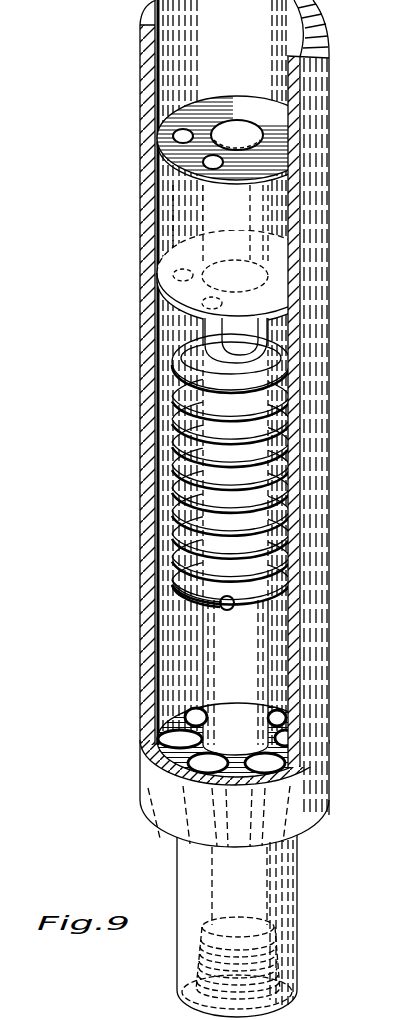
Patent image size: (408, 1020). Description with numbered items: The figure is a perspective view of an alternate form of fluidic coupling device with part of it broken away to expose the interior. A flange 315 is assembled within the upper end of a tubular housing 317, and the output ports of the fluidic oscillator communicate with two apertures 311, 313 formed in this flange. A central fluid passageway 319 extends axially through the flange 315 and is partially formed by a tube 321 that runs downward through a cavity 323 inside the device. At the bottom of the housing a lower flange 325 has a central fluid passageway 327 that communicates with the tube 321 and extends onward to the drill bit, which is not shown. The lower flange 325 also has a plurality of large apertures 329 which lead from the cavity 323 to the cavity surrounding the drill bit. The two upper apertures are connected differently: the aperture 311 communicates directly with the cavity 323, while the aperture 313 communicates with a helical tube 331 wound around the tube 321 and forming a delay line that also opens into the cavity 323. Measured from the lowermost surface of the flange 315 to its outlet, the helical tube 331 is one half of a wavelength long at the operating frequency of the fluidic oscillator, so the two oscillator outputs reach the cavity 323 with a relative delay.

The aperture 311 is at (170, 180).
The aperture 313 is at (203, 213).
The flange 315 is at (163, 228).
The tubular housing 317 is at (150, 307).
The central fluid passageway 319 is at (234, 130).
The tube 321 is at (233, 328).
The cavity 323 is at (165, 414).
The lower flange 325 is at (147, 771).
The central fluid passageway 327 is at (243, 891).
The large apertures 329 is at (152, 821).
The helical tube 331 is at (193, 461).